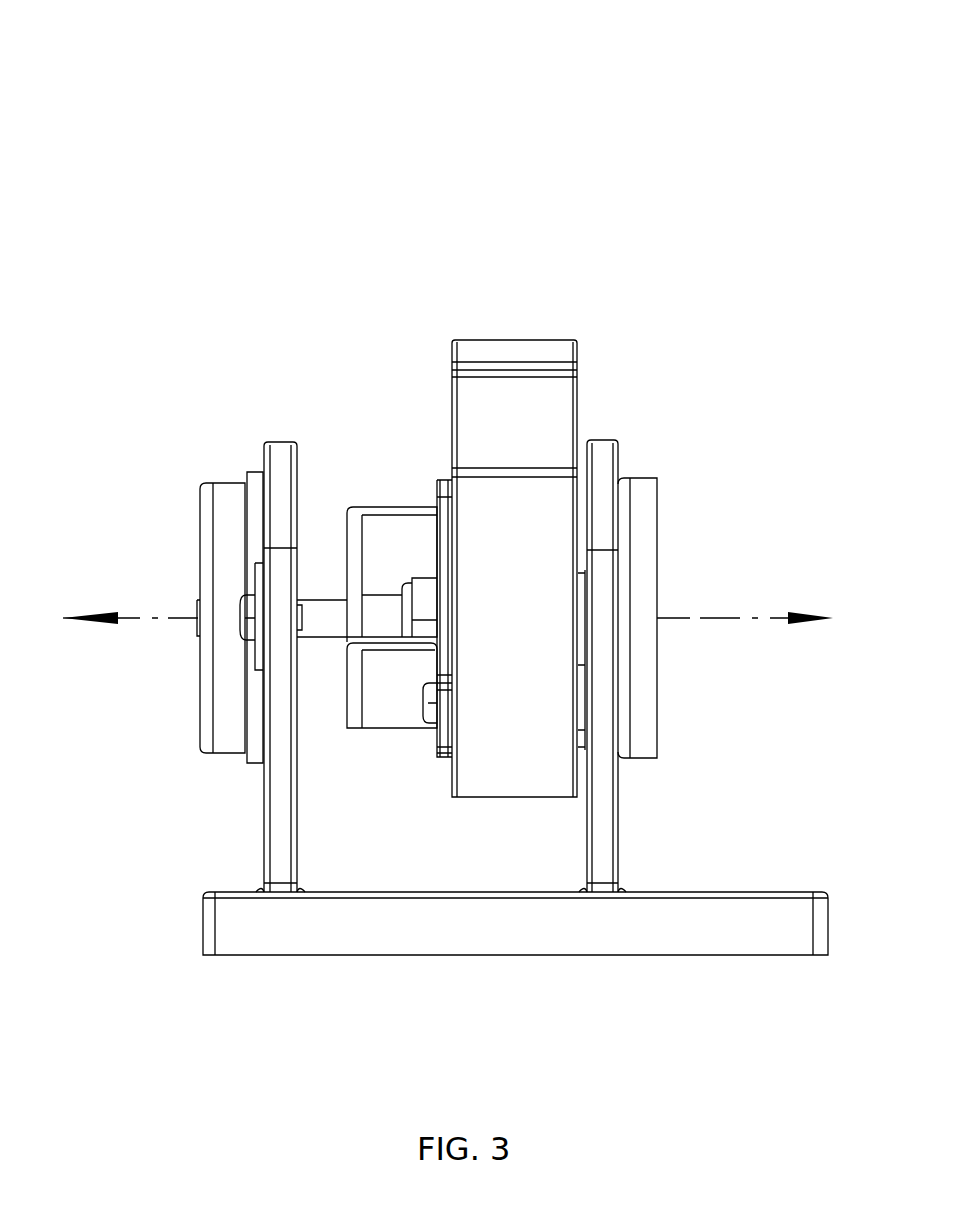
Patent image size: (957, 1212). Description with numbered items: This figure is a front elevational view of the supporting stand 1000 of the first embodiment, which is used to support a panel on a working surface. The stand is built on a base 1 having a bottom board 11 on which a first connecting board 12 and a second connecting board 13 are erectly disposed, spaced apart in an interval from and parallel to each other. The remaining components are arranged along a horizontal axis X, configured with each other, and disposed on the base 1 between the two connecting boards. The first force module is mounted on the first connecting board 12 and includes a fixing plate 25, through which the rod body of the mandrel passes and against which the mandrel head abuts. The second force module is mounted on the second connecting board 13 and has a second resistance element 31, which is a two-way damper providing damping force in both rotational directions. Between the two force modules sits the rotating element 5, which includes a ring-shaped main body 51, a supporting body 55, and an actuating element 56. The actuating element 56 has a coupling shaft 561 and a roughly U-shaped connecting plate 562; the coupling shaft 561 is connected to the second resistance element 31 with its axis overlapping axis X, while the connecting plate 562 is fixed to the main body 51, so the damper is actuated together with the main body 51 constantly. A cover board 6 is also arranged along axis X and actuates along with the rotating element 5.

The supporting stand 1000 is at (460, 82).
The base 1 is at (757, 886).
The bottom board 11 is at (685, 943).
The first connecting board 12 is at (603, 828).
The second connecting board 13 is at (273, 838).
The fixing plate 25 is at (641, 493).
The second resistance element 31 is at (223, 493).
The rotating element 5 is at (489, 320).
The main body 51 is at (510, 760).
The supporting body 55 is at (533, 385).
The actuating element 56 is at (410, 369).
The coupling shaft 561 is at (317, 610).
The connecting plate 562 is at (385, 530).
The cover board 6 is at (447, 520).